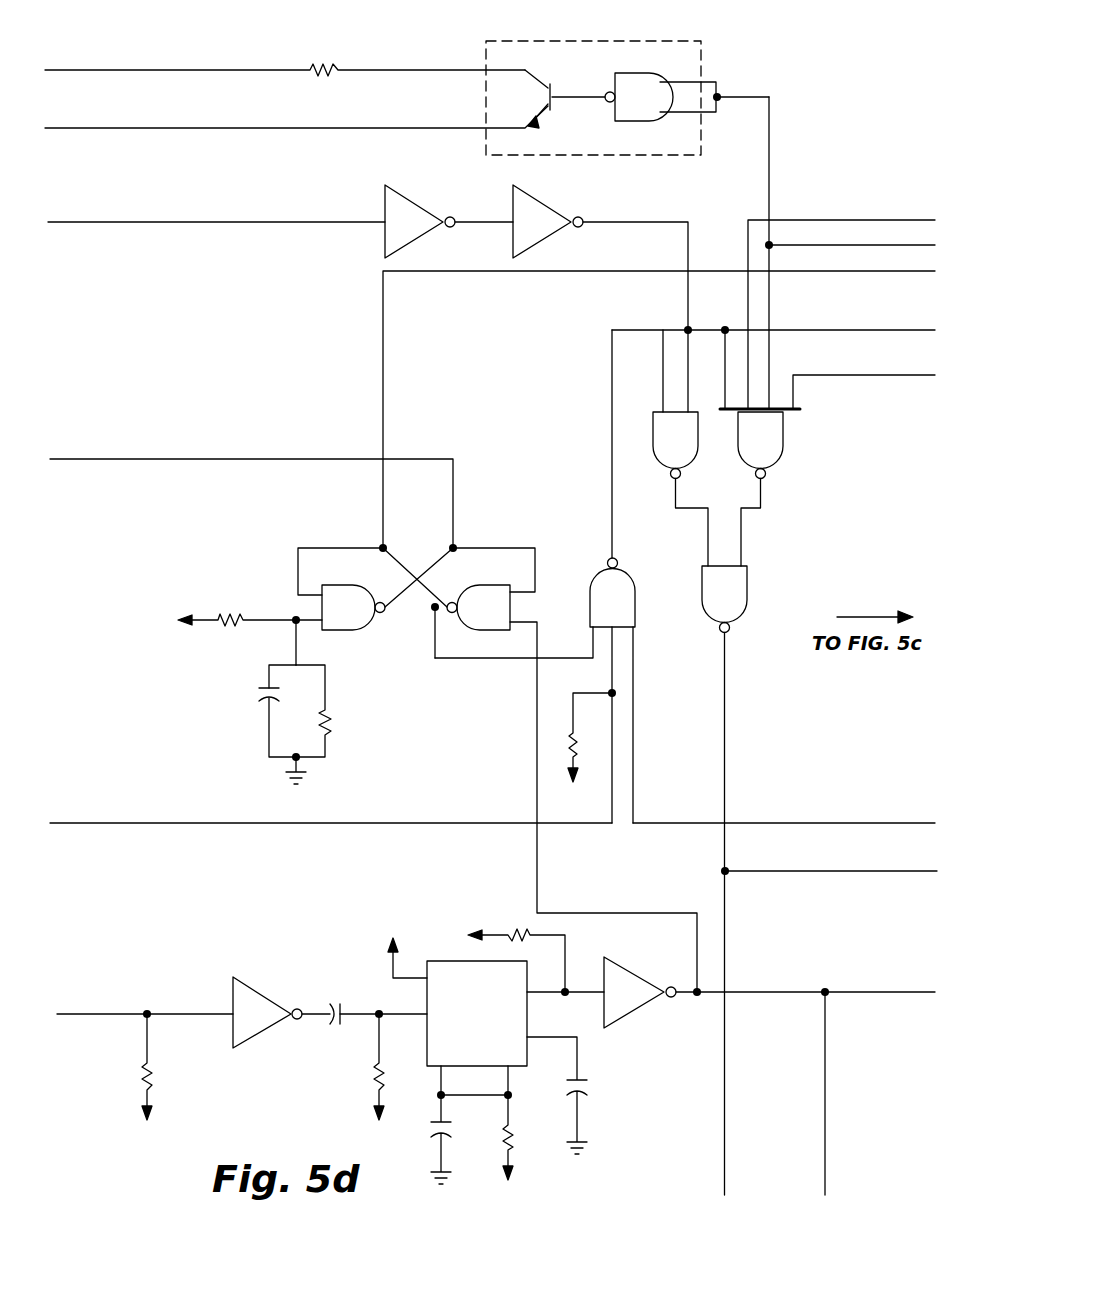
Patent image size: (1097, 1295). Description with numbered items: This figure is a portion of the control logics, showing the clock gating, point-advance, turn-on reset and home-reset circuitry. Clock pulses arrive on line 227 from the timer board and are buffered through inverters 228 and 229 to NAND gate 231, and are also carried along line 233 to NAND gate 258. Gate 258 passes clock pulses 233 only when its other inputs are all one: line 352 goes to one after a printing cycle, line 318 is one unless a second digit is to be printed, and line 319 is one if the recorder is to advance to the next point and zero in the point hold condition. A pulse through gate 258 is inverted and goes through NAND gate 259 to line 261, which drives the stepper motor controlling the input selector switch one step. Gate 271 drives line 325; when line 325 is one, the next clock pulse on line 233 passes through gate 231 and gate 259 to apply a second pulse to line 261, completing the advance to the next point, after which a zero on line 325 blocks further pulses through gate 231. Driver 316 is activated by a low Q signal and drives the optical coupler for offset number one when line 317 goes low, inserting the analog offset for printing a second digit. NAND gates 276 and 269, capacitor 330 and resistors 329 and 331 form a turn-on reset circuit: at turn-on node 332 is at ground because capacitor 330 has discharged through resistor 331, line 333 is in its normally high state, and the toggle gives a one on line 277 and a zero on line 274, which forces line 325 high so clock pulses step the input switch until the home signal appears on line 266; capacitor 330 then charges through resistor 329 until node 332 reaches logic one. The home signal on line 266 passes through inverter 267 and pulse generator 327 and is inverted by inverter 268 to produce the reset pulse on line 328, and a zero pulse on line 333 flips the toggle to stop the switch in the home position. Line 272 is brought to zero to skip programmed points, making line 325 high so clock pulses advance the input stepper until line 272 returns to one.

The driver 316 is at (703, 63).
The Offset No. 1 line 317 is at (242, 69).
The line 318 is at (771, 187).
The clock line 227 is at (147, 220).
The inverter 228 is at (410, 208).
The inverter 229 is at (545, 205).
The line 352 is at (747, 219).
The line 274 is at (383, 408).
The clock pulse line 233 is at (872, 328).
The line 319 is at (876, 374).
The line 325 is at (610, 378).
The line 277 is at (123, 458).
The NAND gate 231 is at (656, 462).
The NAND gate 258 is at (783, 453).
The NAND gate 259 is at (748, 600).
The line 261 is at (728, 1120).
The gate 271 is at (633, 628).
The NAND gate 276 is at (342, 632).
The NAND gate 269 is at (480, 632).
The line 333 is at (540, 622).
The node 332 is at (294, 618).
The resistor 329 is at (232, 637).
The capacitor 330 is at (263, 698).
The resistor 331 is at (331, 720).
The line 272 is at (217, 822).
The line 266 is at (90, 1012).
The inverter 267 is at (268, 996).
The pulse generator 327 is at (425, 990).
The inverter 268 is at (632, 970).
The reset line 328 is at (780, 990).